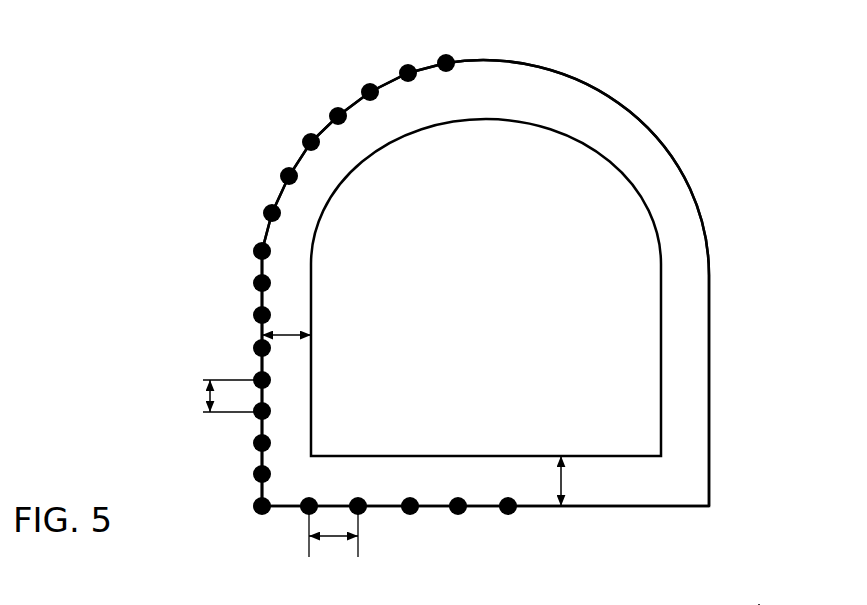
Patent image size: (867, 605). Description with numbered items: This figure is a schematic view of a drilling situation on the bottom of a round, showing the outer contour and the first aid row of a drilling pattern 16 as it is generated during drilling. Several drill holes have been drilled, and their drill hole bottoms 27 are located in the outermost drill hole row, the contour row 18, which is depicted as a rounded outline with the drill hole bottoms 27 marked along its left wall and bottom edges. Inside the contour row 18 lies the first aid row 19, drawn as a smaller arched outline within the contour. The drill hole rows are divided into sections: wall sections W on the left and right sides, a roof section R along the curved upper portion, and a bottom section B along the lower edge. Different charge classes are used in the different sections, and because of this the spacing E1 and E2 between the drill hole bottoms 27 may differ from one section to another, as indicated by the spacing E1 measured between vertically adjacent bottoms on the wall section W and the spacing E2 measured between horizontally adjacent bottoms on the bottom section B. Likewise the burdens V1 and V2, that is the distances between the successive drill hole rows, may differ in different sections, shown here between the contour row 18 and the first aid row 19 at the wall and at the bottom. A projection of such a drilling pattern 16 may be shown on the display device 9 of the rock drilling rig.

The drilling pattern 16 is at (172, 78).
The contour row 18 is at (255, 190).
The drill hole bottoms 27 is at (332, 110).
The first aid row 19 is at (322, 275).
The roof section R is at (572, 47).
The wall section W is at (200, 328).
The bottom section B is at (510, 538).
The burden V1 is at (286, 317).
The burden V2 is at (582, 481).
The spacing E1 is at (211, 396).
The spacing E2 is at (333, 545).
The display device 9 is at (760, 604).